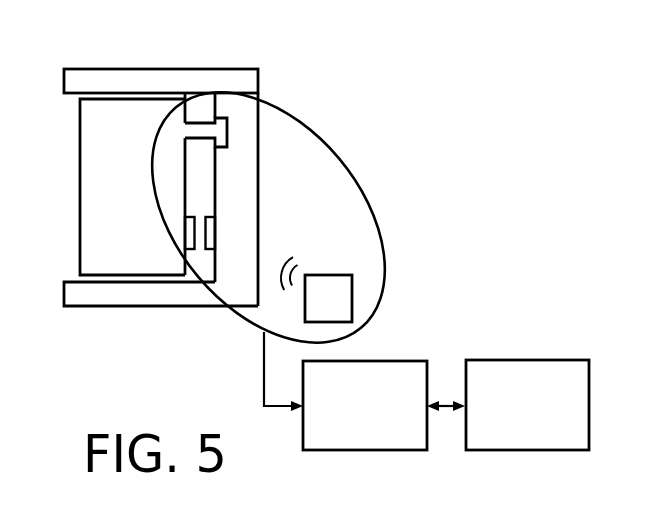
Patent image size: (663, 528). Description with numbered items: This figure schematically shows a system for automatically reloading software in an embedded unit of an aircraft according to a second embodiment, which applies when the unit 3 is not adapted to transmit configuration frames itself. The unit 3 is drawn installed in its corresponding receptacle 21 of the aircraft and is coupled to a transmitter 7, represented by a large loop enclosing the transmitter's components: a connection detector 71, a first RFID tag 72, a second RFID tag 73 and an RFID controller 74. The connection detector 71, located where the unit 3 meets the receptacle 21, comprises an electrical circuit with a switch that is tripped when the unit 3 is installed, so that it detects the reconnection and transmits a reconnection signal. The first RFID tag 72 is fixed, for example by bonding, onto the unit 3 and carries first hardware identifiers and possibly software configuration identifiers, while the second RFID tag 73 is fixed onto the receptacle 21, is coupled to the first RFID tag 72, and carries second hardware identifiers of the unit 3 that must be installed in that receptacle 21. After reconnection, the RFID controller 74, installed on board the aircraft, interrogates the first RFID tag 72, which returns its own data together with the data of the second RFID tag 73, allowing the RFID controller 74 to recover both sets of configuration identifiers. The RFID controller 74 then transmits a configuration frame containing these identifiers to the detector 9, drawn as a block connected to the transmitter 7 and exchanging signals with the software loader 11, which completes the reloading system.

The unit 3 is at (79, 187).
The receptacle 21 is at (155, 69).
The transmitter 7 is at (317, 133).
The connection detector 71 is at (232, 128).
The first RFID tag 72 is at (186, 222).
The second RFID tag 73 is at (212, 219).
The RFID controller 74 is at (320, 275).
The detector 9 is at (387, 361).
The software loader 11 is at (517, 360).